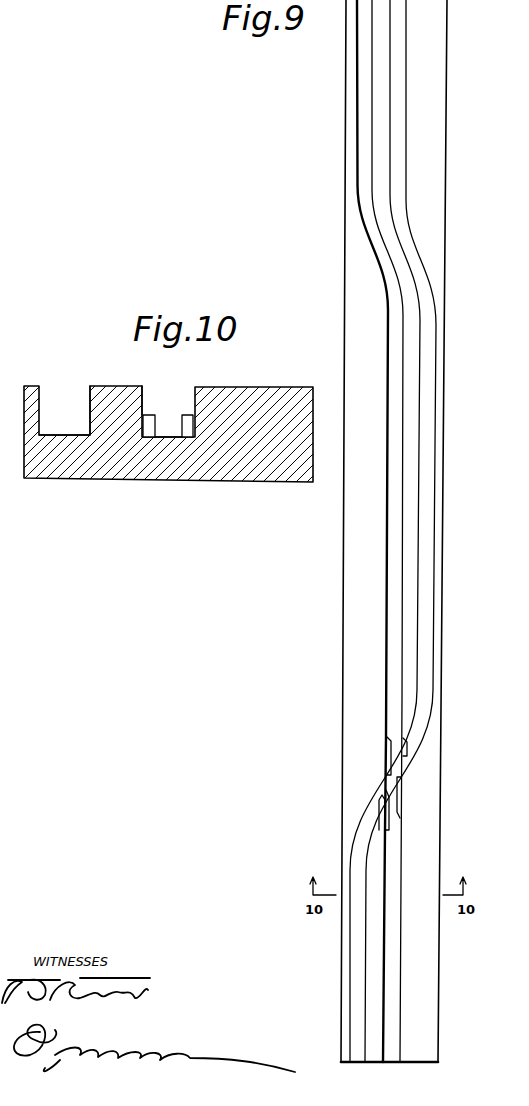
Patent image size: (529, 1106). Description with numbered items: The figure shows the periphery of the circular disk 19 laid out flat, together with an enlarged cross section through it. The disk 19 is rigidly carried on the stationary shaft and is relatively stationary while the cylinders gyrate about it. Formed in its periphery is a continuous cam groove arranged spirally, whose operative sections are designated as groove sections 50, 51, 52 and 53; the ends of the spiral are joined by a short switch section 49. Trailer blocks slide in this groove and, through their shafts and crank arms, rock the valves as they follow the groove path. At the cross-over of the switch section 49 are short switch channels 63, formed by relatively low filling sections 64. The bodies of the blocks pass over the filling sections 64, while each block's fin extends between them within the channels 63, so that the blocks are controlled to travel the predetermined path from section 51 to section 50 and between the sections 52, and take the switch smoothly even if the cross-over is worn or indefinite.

In FIG. 9, the circular disk 19 is at (436, 949).
In FIG. 10, the circular disk 19 is at (288, 396).
In FIG. 9, the switch section 49 is at (370, 812).
In FIG. 10, the switch section 49 is at (172, 392).
In FIG. 9, the groove section 50 is at (427, 546).
In FIG. 9, the groove section 51 is at (362, 130).
In FIG. 10, the groove section 51 is at (63, 393).
In FIG. 9, the groove section 52 is at (402, 115).
In FIG. 9, the groove section 53 is at (380, 252).
In FIG. 9, the switch channel 63 is at (392, 797).
In FIG. 10, the switch channel 63 is at (170, 437).
In FIG. 9, the filling section 64 is at (403, 745).
In FIG. 10, the filling section 64 is at (150, 415).